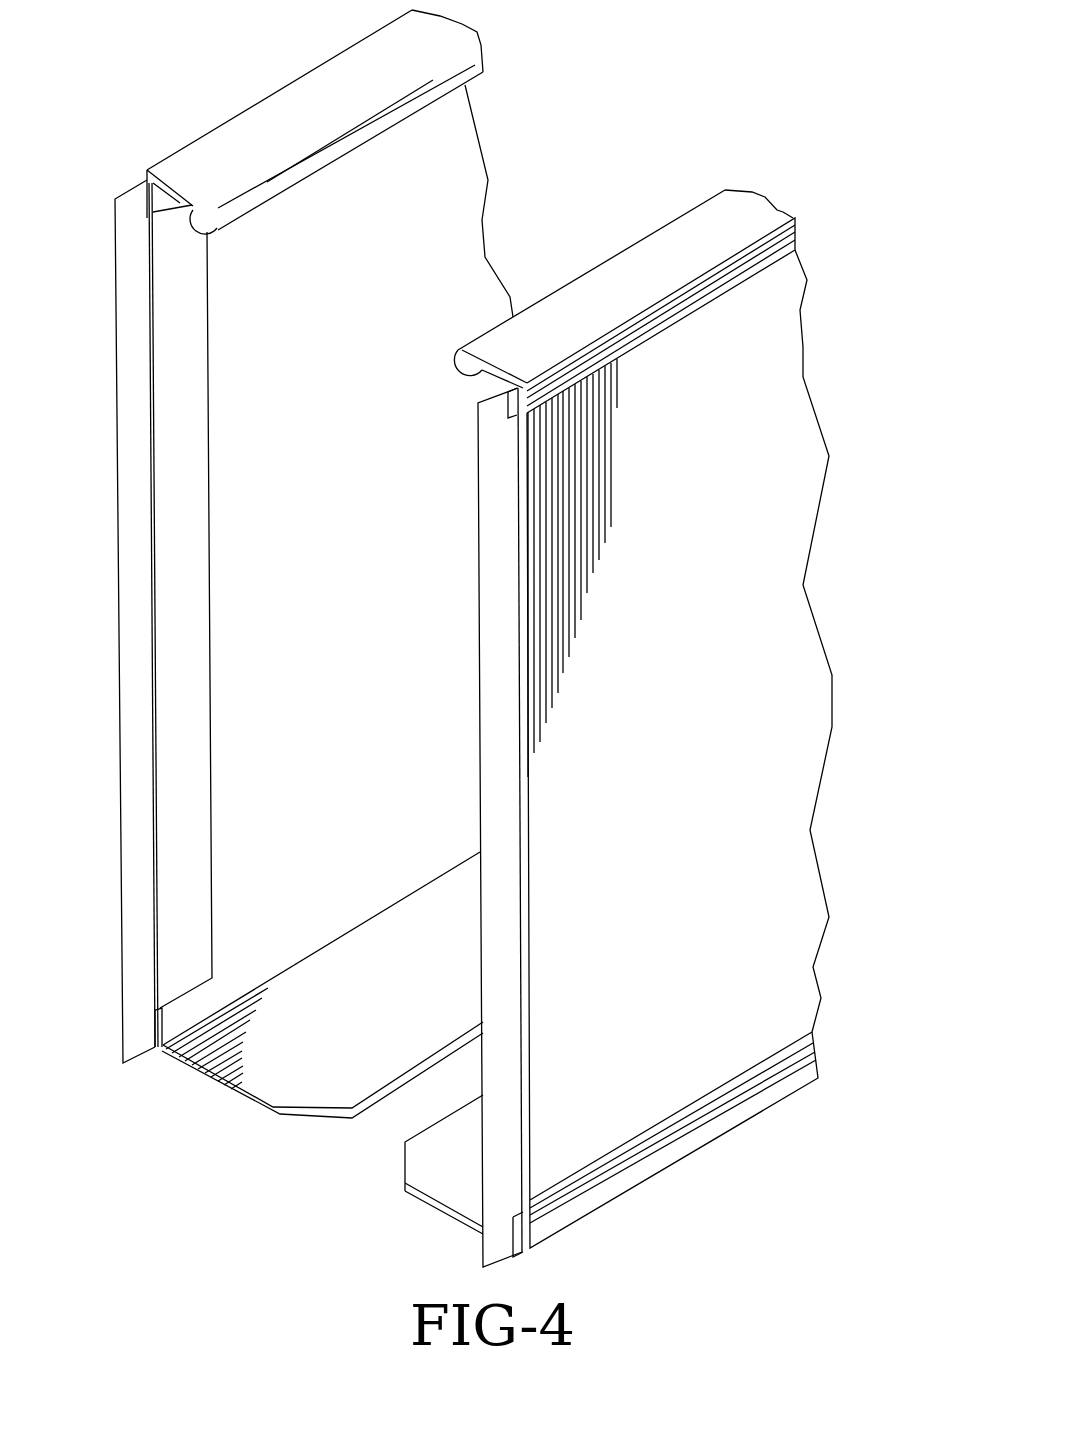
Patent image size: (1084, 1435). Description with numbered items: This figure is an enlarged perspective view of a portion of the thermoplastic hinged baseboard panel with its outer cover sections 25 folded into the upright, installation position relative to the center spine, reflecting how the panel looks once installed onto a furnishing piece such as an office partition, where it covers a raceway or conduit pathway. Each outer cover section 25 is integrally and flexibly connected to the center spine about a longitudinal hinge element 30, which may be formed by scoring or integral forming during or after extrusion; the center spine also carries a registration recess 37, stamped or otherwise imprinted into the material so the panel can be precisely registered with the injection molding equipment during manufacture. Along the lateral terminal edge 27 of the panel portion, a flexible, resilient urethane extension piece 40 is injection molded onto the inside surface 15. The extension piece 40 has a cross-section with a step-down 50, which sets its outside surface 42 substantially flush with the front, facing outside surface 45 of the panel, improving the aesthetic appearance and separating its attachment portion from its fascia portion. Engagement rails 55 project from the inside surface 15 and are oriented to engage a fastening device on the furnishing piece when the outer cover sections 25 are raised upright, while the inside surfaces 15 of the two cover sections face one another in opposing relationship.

The inside surface 15 is at (339, 556).
The outer cover section 25 is at (478, 131).
The lateral terminal edge 27 is at (158, 1025).
The longitudinal hinge element 30 is at (323, 943).
The registration recess 37 is at (390, 1110).
The extension piece 40 is at (115, 293).
The outside surface of extension piece 42 is at (514, 816).
The outside surface 45 is at (682, 733).
The step-down 50 is at (150, 538).
The engagement rail 55 is at (245, 131).